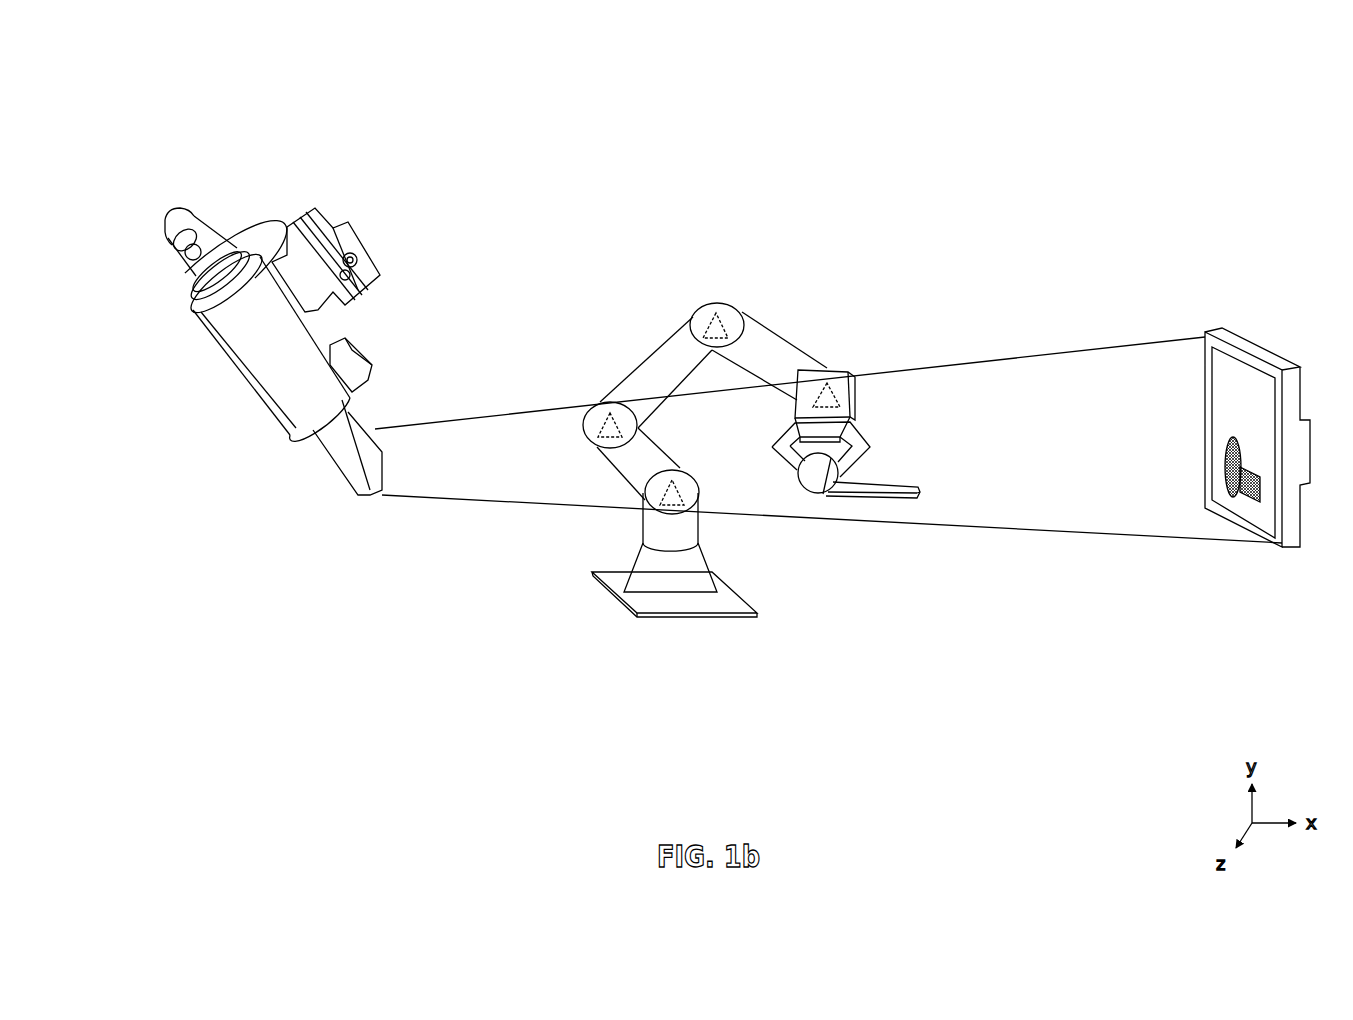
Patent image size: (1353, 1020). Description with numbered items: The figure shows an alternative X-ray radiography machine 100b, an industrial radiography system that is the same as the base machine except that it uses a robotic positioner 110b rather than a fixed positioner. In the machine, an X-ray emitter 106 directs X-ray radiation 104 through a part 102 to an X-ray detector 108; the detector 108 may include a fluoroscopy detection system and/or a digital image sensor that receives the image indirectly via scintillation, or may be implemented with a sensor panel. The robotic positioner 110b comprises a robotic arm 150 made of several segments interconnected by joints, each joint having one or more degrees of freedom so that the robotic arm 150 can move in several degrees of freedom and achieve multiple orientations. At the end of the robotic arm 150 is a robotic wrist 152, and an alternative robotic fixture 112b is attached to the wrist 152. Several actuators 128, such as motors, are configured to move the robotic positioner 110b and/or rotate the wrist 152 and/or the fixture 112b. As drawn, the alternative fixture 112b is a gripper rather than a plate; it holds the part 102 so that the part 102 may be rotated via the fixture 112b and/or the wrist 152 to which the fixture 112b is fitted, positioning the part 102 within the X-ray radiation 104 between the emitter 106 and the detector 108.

The alternative X-ray radiography machine 100b is at (137, 141).
The X-ray emitter 106 is at (356, 222).
The X-ray radiation 104 is at (894, 361).
The robotic arm 150 is at (602, 357).
The actuators 128 is at (701, 327).
The robotic positioner 110b is at (771, 301).
The robotic wrist 152 is at (827, 363).
The alternative robotic fixture 112b is at (775, 426).
The part 102 is at (883, 473).
The X-ray detector 108 is at (1255, 337).